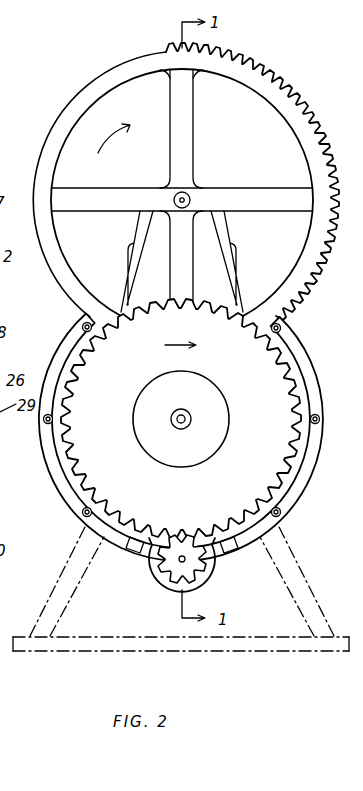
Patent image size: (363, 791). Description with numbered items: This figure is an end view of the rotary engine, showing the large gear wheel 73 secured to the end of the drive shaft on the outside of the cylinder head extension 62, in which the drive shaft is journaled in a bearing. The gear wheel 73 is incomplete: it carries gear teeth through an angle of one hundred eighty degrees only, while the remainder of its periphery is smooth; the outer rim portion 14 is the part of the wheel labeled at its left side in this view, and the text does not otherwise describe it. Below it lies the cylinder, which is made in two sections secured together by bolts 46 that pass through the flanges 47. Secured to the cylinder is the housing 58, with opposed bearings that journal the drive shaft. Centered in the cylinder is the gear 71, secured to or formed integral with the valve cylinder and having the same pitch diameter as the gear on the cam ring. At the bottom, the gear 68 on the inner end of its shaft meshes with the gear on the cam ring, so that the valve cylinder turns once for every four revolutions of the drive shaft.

The gear wheel rim 14 is at (38, 157).
The gear wheel 73 is at (305, 141).
The extension of the cylinder head 62 is at (177, 268).
The housing 58 is at (233, 253).
The flanges 47 is at (66, 344).
The bolts 46 is at (319, 418).
The gear 71 is at (160, 419).
The gear 68 is at (215, 562).